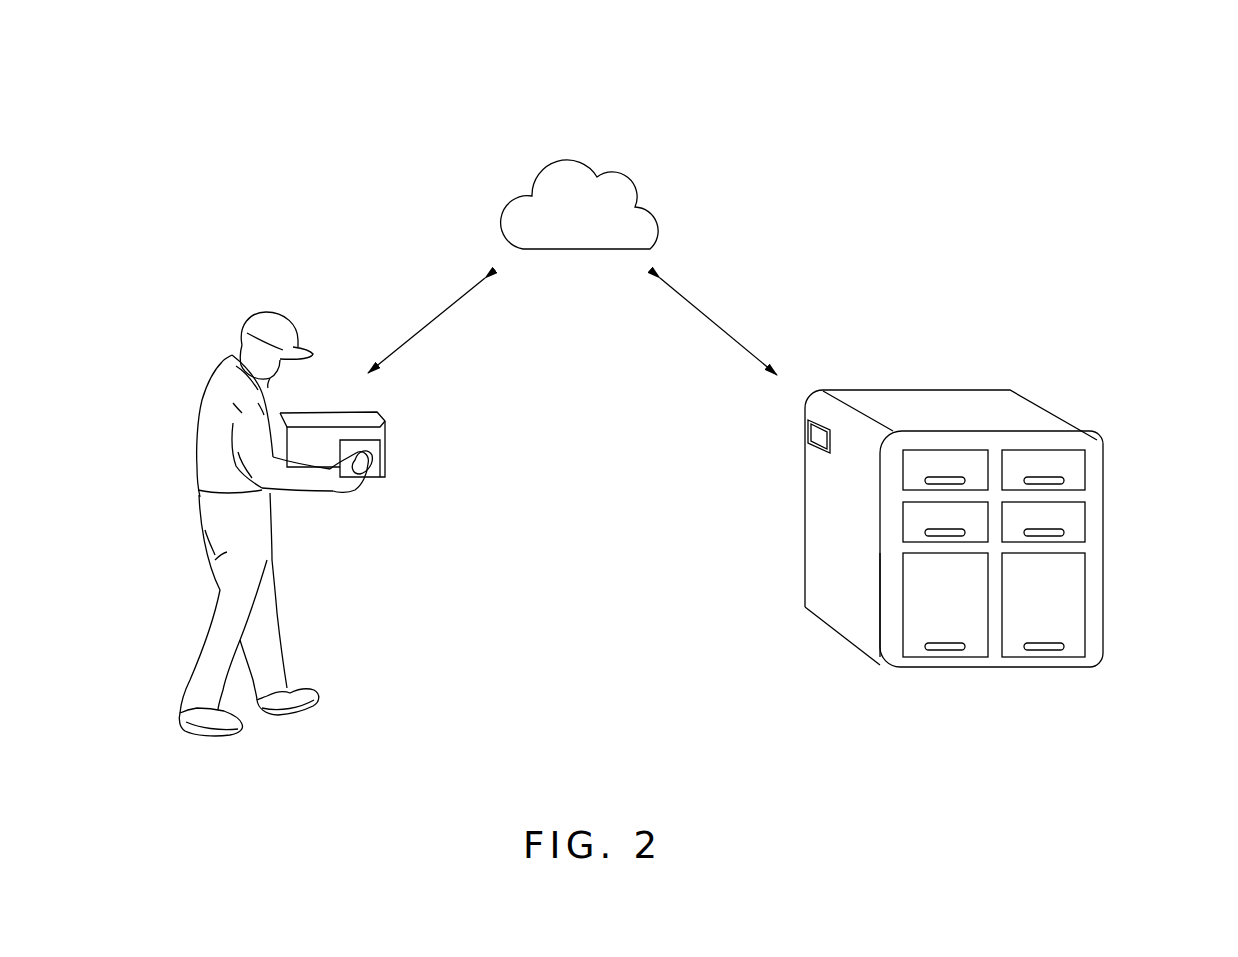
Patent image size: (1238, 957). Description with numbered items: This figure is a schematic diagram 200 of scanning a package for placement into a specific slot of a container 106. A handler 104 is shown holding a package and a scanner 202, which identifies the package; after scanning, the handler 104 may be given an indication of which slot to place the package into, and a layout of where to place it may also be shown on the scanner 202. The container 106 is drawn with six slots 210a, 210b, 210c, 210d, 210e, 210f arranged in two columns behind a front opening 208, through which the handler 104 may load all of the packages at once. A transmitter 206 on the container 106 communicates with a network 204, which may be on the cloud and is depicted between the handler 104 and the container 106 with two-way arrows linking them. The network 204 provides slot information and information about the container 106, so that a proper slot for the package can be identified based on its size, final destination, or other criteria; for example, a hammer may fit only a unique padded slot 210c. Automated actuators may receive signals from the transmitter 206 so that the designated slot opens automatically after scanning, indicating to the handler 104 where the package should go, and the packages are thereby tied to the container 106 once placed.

The schematic diagram 200 is at (199, 138).
The handler 104 is at (205, 420).
The scanner 202 is at (380, 485).
The network 204 is at (653, 227).
The container 106 is at (964, 538).
The transmitter 206 is at (806, 432).
The front opening 208 is at (893, 548).
The slot 210a is at (916, 455).
The slot 210b is at (1030, 462).
The slot 210c is at (915, 518).
The slot 210d is at (1072, 513).
The slot 210e is at (912, 645).
The slot 210f is at (1012, 645).